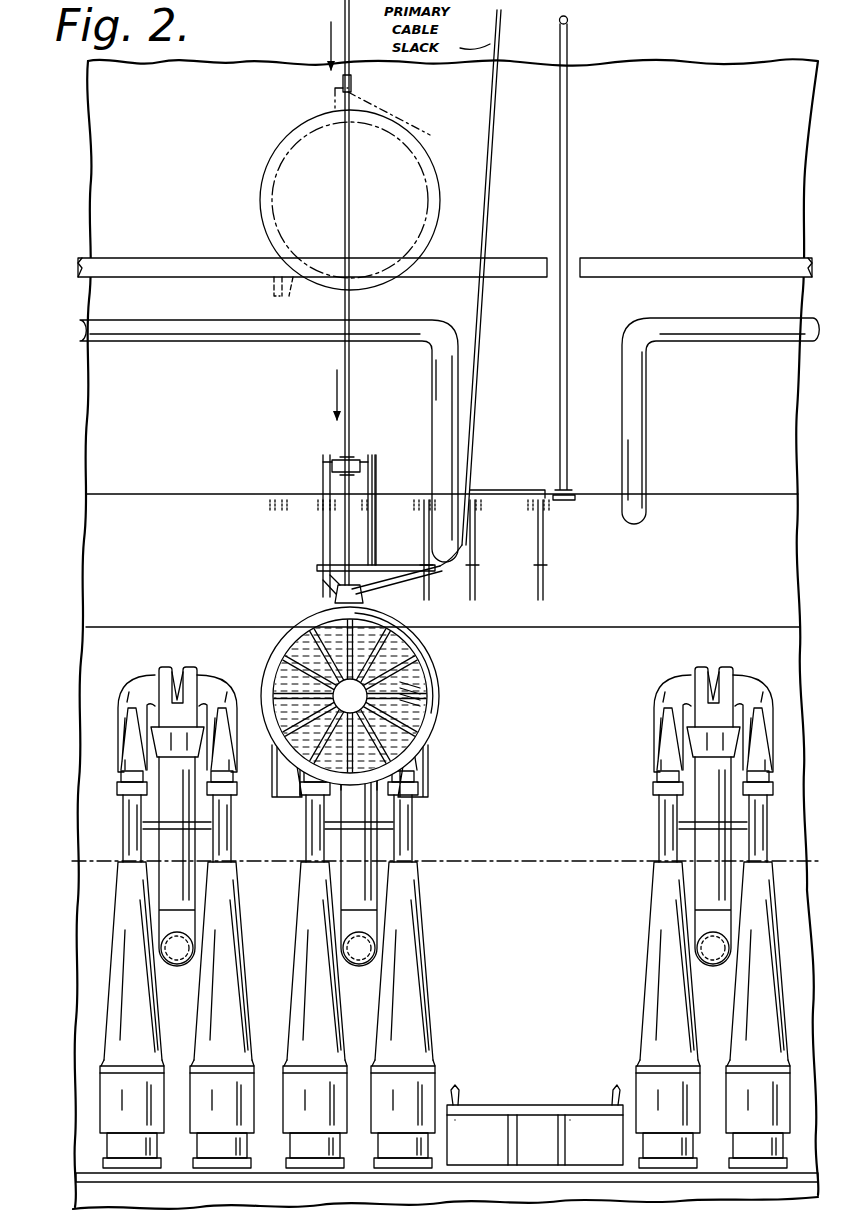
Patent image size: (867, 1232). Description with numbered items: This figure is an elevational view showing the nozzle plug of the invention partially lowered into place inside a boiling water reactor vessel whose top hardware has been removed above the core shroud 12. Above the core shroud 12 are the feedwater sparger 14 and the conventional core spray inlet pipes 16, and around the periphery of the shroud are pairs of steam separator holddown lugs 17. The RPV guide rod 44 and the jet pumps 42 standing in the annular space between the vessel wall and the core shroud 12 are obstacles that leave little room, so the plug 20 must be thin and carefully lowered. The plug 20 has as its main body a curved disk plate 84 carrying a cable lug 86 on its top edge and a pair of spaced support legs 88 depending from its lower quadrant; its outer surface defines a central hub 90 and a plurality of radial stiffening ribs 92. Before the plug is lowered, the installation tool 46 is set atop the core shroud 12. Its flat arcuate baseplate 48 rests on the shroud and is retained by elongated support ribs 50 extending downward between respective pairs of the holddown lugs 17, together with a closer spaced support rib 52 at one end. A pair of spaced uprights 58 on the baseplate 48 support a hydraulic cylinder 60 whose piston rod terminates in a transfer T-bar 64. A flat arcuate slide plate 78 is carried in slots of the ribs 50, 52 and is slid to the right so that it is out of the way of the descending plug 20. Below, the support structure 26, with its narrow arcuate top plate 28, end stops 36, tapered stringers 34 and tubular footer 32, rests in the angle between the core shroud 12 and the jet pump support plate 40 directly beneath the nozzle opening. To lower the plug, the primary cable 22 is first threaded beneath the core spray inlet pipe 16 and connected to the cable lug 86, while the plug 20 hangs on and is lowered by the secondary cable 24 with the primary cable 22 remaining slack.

The core shroud 12 is at (167, 492).
The feedwater sparger 14 is at (168, 258).
The core spray inlet pipes 16 is at (204, 342).
The steam separator holddown lugs 17 is at (418, 506).
The plug 20 is at (352, 436).
The primary cable 22 is at (490, 38).
The secondary cable 24 is at (343, 8).
The support structure 26 is at (535, 1096).
The top plate 28 is at (492, 1105).
The footer 32 is at (474, 1162).
The stringers 34 is at (568, 1130).
The end stops 36 is at (458, 1098).
The jet pump support plate 40 is at (272, 1183).
The jet pumps 42 is at (126, 684).
The RPV guide rod 44 is at (567, 154).
The installation tool 46 is at (316, 516).
The baseplate 48 is at (502, 490).
The elongated support ribs 50 is at (371, 538).
The support rib 52 is at (316, 562).
The uprights 58 is at (322, 470).
The hydraulic cylinder 60 is at (344, 460).
The transfer T-bar 64 is at (360, 460).
The slide plate 78 is at (312, 572).
The disk plate 84 is at (438, 742).
The cable lug 86 is at (333, 594).
The support legs 88 is at (270, 290).
The central hub 90 is at (333, 692).
The radial stiffening ribs 92 is at (412, 686).